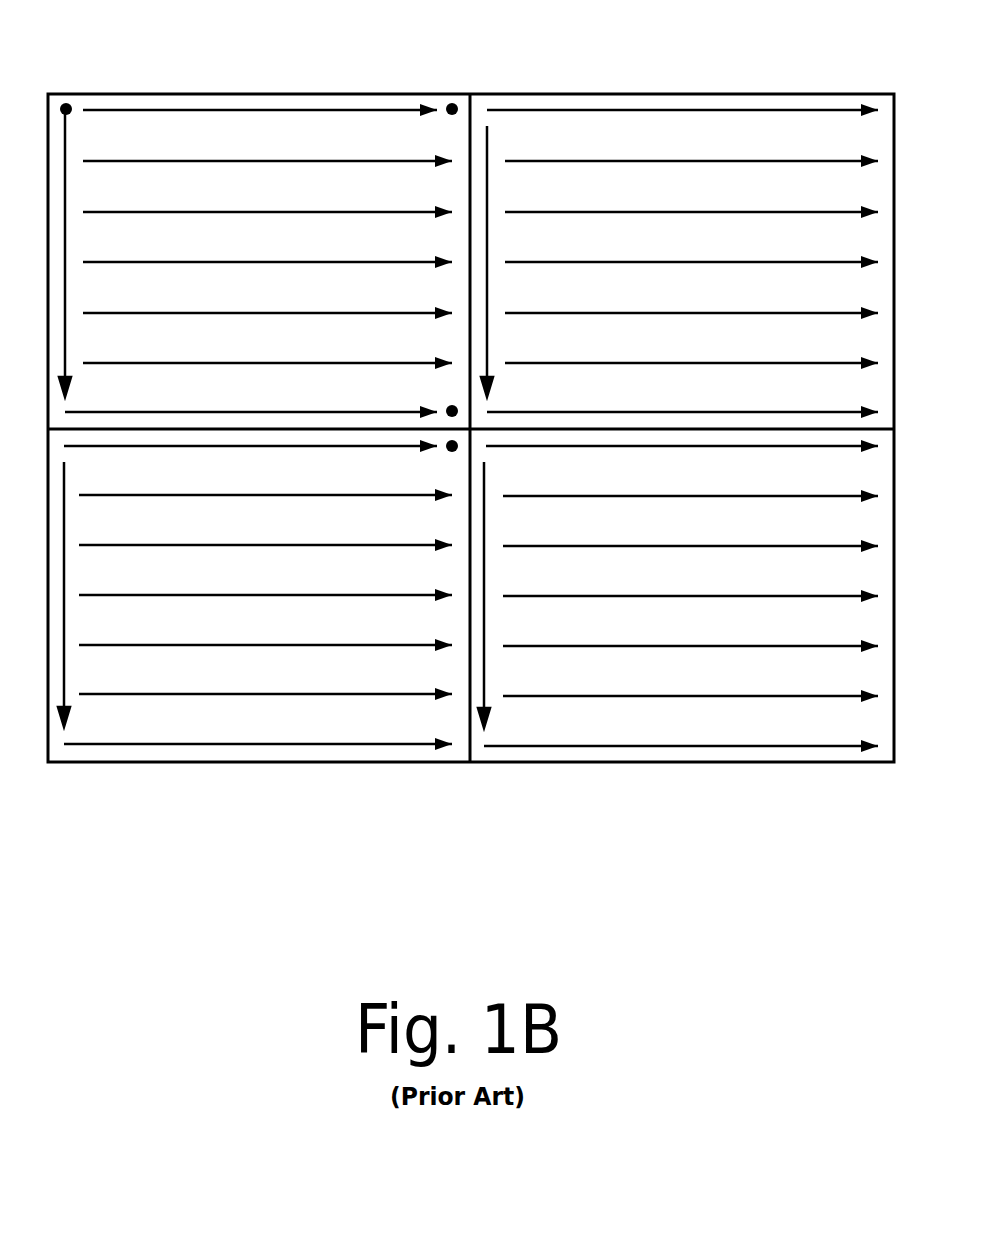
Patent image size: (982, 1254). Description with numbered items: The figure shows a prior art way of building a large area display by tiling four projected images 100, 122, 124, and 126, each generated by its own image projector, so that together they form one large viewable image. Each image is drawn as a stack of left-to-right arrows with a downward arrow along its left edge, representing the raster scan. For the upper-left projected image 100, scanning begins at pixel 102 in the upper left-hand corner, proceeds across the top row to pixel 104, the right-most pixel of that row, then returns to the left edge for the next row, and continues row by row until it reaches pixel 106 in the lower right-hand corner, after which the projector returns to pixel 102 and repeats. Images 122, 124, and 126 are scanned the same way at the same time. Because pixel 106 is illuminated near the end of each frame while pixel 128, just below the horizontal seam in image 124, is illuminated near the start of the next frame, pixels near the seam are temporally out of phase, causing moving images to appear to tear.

The projected image 100 is at (258, 252).
The pixel 102 is at (68, 106).
The pixel 104 is at (455, 105).
The pixel 106 is at (449, 407).
The projected image 122 is at (692, 252).
The projected image 124 is at (252, 585).
The projected image 126 is at (672, 587).
The pixel 128 is at (448, 449).